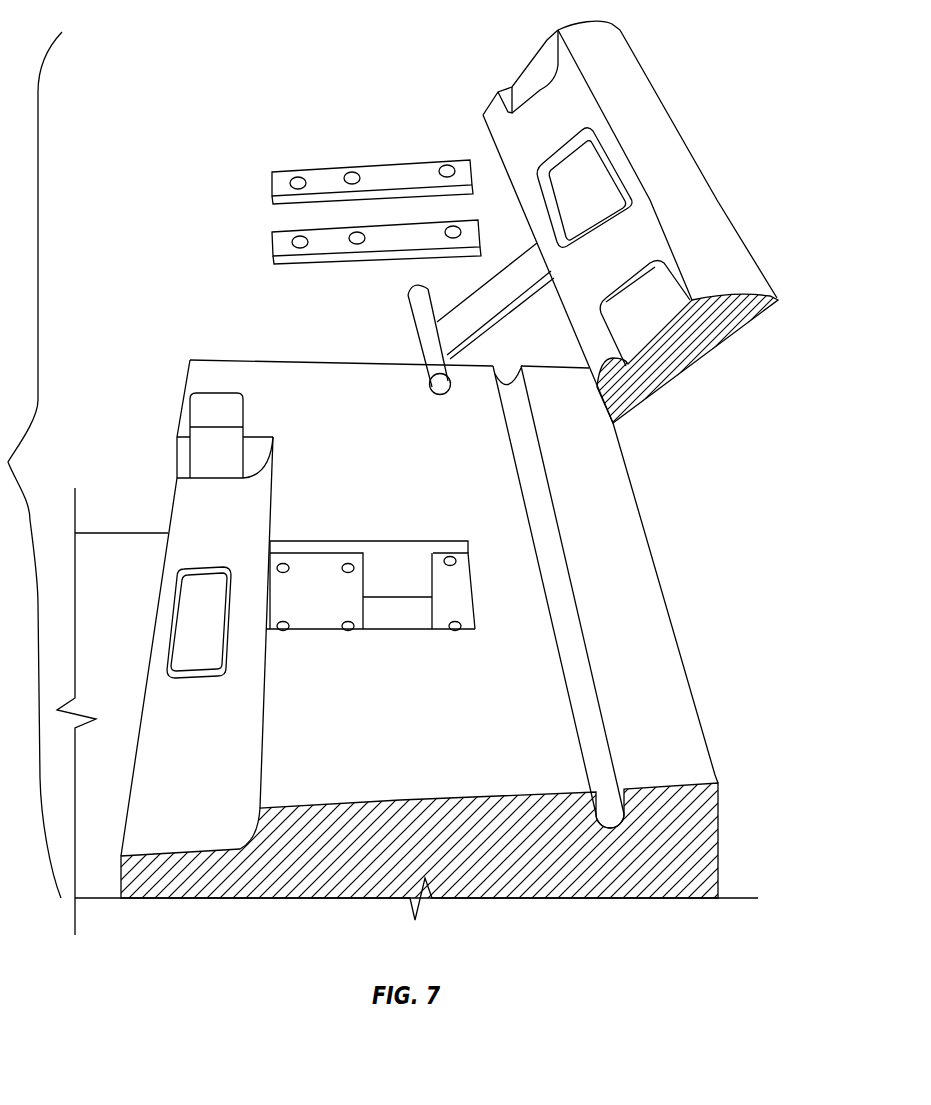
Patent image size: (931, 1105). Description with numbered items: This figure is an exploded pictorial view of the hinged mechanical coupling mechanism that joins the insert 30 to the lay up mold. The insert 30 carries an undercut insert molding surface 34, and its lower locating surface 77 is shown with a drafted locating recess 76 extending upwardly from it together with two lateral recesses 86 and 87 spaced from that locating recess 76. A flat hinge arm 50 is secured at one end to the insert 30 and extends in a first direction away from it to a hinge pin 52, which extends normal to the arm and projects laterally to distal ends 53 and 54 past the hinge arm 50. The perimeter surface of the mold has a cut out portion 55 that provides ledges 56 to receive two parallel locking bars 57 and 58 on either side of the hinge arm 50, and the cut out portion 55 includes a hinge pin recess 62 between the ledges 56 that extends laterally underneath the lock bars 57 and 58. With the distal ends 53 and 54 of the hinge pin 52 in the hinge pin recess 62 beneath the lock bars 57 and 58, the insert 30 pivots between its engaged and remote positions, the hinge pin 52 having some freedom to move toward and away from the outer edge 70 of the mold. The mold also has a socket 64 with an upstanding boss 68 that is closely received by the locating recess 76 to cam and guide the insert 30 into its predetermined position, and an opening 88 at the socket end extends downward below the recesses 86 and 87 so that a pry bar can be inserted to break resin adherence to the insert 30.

The insert 30 is at (716, 177).
The insert molding surface 34 is at (732, 246).
The hinge arm 50 is at (488, 312).
The hinge pin 52 is at (428, 352).
The distal end of hinge pin 53 is at (410, 282).
The distal end of hinge pin 54 is at (442, 390).
The cut out portion 55 is at (394, 514).
The ledges 56 is at (317, 577).
The locking bar 57 is at (264, 180).
The locking bar 58 is at (264, 240).
The hinge pin recess 62 is at (396, 610).
The socket 64 is at (152, 767).
The upstanding boss 68 is at (217, 630).
The outer edge of the mold 70 is at (653, 540).
The locating recess 76 is at (602, 182).
The lower locating surface 77 is at (560, 98).
The lateral recess 86 is at (513, 88).
The lateral recess 87 is at (654, 312).
The opening 88 is at (207, 405).